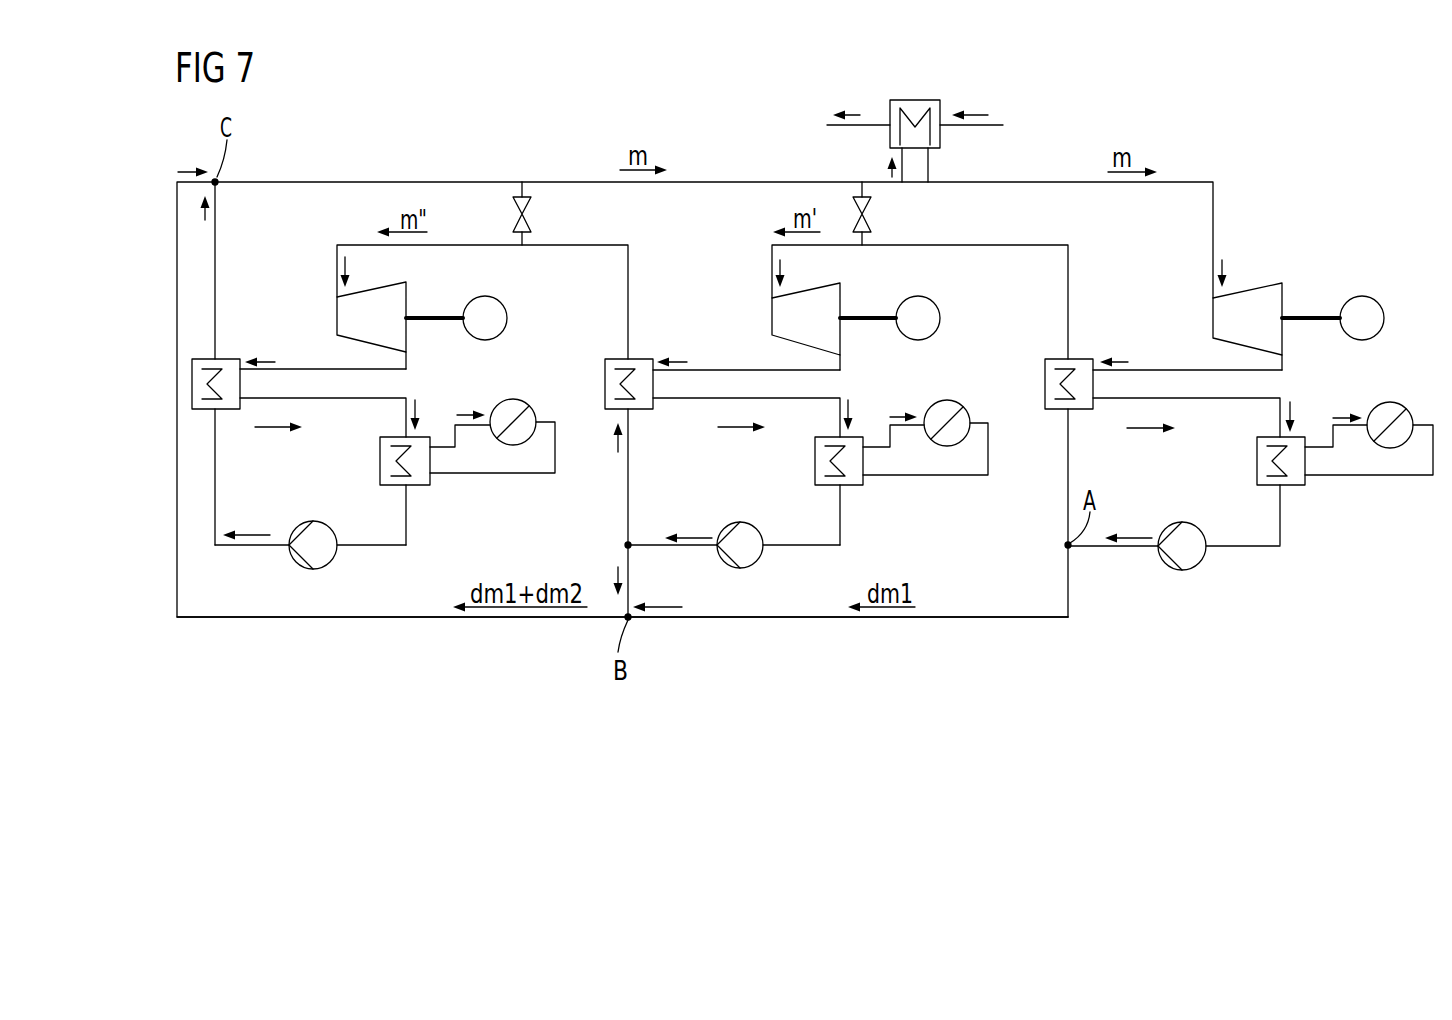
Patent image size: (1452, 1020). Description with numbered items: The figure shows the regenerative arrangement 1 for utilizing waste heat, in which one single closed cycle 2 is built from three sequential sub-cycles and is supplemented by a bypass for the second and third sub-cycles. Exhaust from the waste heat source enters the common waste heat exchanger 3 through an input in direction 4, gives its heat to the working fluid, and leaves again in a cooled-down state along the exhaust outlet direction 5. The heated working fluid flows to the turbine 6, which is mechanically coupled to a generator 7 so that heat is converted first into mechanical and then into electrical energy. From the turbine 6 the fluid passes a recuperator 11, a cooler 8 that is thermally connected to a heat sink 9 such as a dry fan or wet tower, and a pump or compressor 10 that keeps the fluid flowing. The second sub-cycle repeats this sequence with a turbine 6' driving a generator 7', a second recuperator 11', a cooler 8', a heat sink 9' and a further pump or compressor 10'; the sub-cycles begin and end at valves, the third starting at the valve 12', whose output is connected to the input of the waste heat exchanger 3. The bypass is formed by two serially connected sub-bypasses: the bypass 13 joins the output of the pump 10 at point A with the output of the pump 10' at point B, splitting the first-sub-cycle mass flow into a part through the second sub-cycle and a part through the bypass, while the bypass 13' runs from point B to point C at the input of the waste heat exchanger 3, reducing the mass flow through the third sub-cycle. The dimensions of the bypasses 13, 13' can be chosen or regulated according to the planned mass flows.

The regenerative arrangement 1 is at (1327, 160).
The cycle 2 is at (1110, 633).
The waste heat exchanger 3 is at (933, 98).
The direction 4 is at (995, 123).
The heat source outlet 5 is at (872, 123).
The turbine 6 is at (1247, 297).
The turbine 6' is at (779, 326).
The generator 7 is at (1333, 284).
The generator 7' is at (920, 318).
The cooler 8 is at (1318, 485).
The cooler 8' is at (874, 484).
The heat sink 9 is at (1373, 393).
The cooling unit (second stage) 9' is at (930, 390).
The pump or compressor 10 is at (1174, 552).
The pump or compressor 10' is at (734, 552).
The recuperator 11 is at (1170, 365).
The second recuperator 11' is at (729, 365).
The valve 12' is at (890, 213).
The bypass 13 is at (848, 651).
The bypass 13' is at (402, 651).